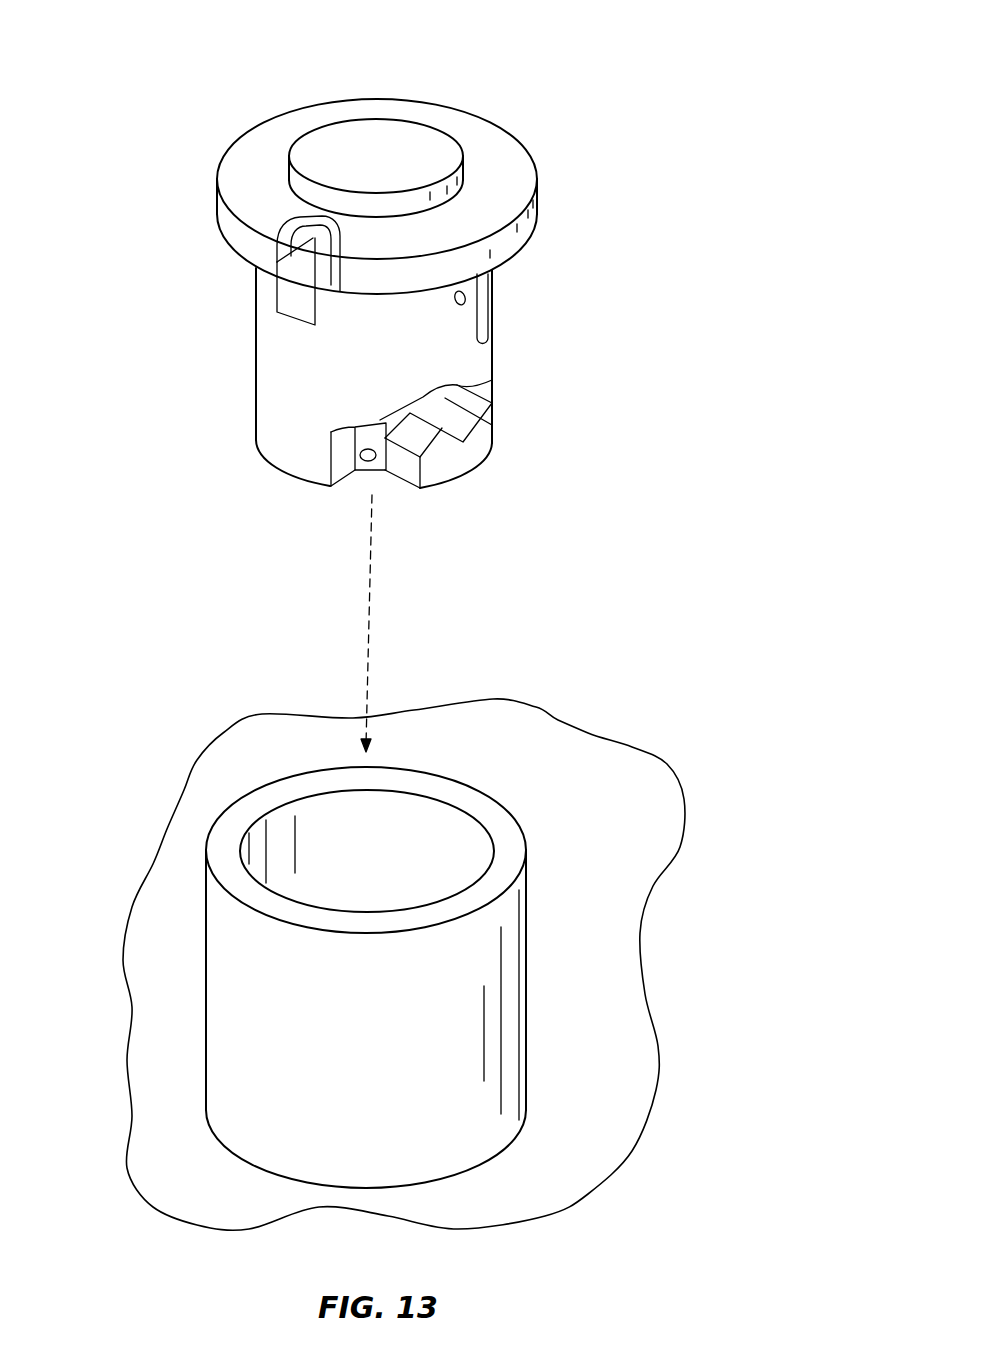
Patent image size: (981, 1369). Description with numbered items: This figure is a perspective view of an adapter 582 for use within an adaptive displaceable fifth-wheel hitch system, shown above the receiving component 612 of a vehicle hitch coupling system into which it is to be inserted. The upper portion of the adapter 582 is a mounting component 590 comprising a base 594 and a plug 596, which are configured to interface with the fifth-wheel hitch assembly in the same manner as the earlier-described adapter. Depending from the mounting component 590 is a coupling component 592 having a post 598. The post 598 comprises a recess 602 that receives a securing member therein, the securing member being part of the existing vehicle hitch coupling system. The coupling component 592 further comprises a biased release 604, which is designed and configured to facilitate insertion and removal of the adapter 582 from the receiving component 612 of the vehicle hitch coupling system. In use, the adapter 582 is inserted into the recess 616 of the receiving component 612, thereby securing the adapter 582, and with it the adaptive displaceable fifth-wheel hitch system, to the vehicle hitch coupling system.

The adapter 582 is at (572, 82).
The mounting component 590 is at (180, 98).
The coupling component 592 is at (527, 258).
The base 594 is at (512, 162).
The plug 596 is at (390, 147).
The post 598 is at (287, 373).
The recess 602 is at (381, 479).
The biased release 604 is at (288, 290).
The receiving component 612 is at (249, 1020).
The recess 616 is at (443, 838).